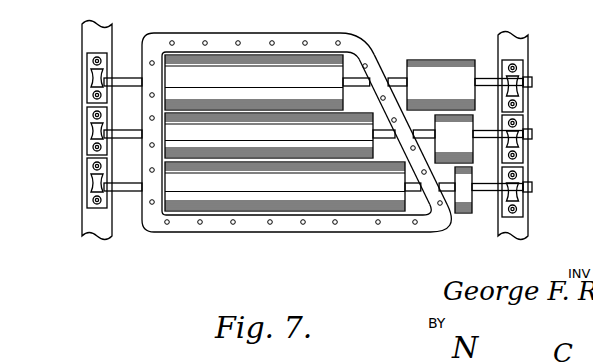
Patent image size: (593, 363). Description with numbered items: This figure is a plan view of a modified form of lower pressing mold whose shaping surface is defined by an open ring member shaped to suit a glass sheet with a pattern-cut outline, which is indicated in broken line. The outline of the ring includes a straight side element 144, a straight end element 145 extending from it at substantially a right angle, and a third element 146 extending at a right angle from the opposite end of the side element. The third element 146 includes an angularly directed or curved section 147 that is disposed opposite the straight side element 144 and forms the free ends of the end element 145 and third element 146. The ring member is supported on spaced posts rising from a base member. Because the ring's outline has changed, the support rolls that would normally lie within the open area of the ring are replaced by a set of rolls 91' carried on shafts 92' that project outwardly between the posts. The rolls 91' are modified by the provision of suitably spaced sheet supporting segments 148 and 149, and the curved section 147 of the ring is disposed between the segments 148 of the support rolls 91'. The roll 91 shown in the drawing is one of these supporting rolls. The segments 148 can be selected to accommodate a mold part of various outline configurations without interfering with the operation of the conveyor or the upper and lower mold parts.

The straight side element 144 is at (148, 123).
The straight end element 145 is at (313, 222).
The third element 146 is at (253, 47).
The angularly directed or curved section 147 is at (372, 83).
The sheet supporting segments 148 is at (325, 78).
The sheet supporting segments 149 is at (450, 82).
The roller 91 is at (285, 211).
The support rolls 91' is at (266, 58).
The shafts 92' is at (524, 138).